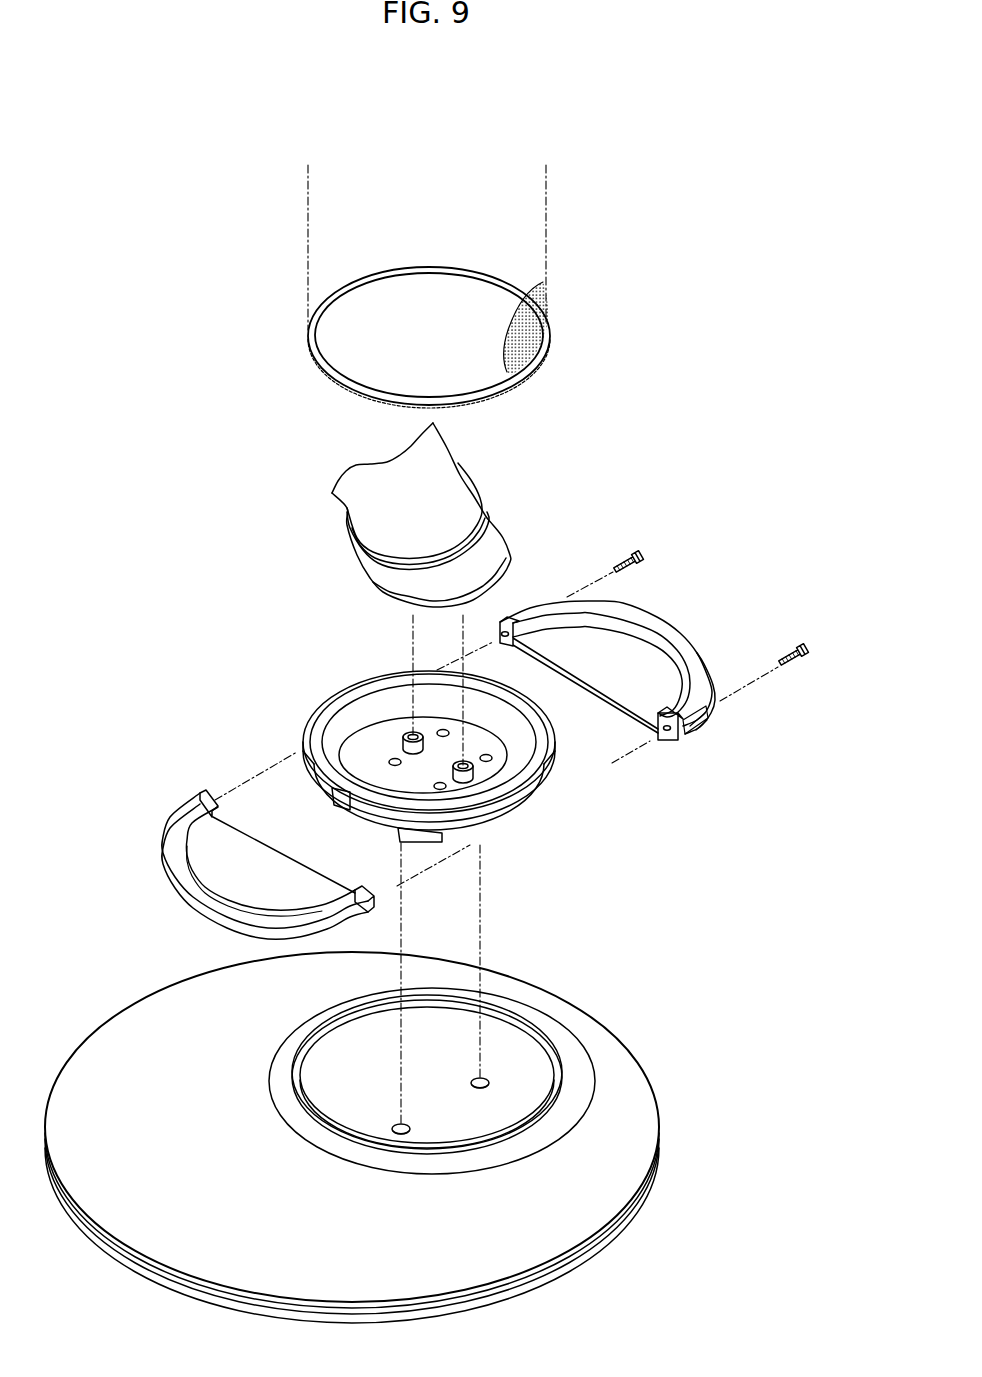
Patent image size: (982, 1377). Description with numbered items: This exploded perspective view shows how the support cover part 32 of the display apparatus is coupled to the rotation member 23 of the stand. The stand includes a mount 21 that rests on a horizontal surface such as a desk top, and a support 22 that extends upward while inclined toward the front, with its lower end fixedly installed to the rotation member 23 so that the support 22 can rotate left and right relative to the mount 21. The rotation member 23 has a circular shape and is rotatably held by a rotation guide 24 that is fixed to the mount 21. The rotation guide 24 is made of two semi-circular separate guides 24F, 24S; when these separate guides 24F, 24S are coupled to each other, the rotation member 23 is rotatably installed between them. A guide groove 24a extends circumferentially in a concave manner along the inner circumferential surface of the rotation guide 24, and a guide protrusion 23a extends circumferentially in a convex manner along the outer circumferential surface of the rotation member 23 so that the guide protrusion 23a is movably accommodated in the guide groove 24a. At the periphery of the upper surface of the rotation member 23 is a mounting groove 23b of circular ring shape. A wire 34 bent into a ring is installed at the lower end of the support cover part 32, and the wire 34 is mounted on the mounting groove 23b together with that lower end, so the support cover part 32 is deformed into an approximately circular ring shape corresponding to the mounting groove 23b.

The mount 21 is at (648, 1068).
The support 22 is at (490, 495).
The rotation member 23 is at (380, 745).
The guide protrusion 23a is at (437, 843).
The mounting groove 23b is at (308, 733).
The rotation guide 24 is at (485, 741).
The guide groove 24a is at (653, 640).
The separate guide 24S is at (684, 727).
The separate guide 24F is at (383, 920).
The support cover part 32 is at (544, 283).
The wire 34 is at (310, 340).